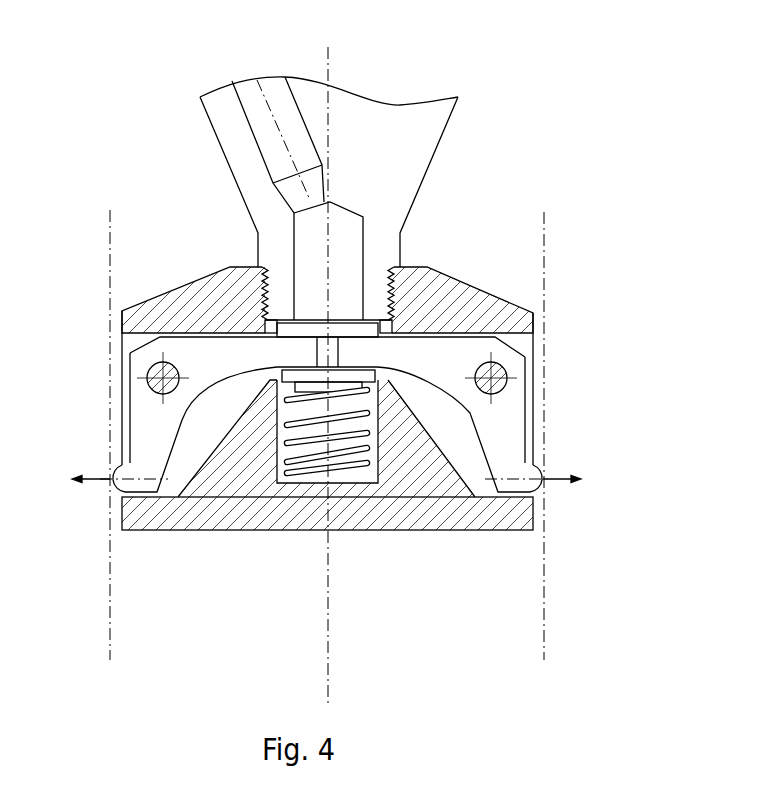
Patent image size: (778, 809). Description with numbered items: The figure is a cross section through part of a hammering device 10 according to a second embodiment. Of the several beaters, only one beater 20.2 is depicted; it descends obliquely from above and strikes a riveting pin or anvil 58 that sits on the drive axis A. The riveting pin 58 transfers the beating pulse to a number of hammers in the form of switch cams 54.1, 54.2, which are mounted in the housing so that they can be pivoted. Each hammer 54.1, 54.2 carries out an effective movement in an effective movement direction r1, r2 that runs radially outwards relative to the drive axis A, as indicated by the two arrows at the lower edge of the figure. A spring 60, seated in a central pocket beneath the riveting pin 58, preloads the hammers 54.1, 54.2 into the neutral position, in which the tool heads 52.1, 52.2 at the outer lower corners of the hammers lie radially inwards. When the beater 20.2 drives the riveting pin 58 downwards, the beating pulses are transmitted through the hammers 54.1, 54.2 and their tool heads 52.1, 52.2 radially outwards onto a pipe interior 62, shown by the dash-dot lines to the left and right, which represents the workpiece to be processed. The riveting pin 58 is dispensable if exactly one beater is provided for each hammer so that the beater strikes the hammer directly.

The hammering device 10 is at (408, 80).
The beater 20.2 is at (267, 122).
The riveting pin or anvil 58 is at (342, 243).
The hammer (switch cam) 54.1 is at (153, 427).
The hammer (switch cam) 54.2 is at (505, 433).
The tool head 52.1 is at (107, 491).
The tool head 52.2 is at (549, 468).
The spring 60 is at (303, 480).
The pipe interior 62 is at (119, 610).
The drive axis A is at (330, 568).
The effective movement direction r1 is at (68, 478).
The effective movement direction r2 is at (566, 495).